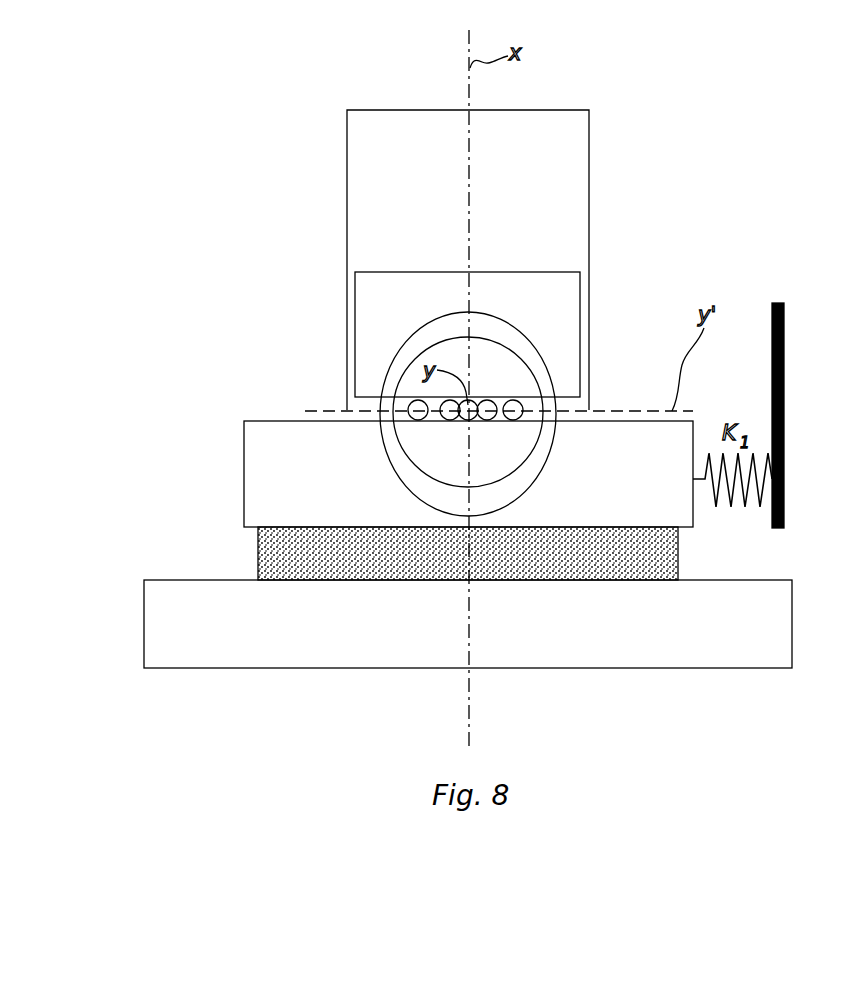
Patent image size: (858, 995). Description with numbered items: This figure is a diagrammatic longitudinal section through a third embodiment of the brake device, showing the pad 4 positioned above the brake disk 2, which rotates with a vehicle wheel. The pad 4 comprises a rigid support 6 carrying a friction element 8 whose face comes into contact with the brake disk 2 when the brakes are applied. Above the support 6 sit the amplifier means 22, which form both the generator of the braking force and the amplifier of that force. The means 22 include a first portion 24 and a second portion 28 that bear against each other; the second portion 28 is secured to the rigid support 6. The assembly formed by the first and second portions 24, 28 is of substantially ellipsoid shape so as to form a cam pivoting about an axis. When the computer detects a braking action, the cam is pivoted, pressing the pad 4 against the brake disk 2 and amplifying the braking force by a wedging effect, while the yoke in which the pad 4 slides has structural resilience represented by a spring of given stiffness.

The brake disk 2 is at (785, 637).
The brake pad 4 is at (185, 500).
The rigid support 6 is at (257, 472).
The friction element 8 is at (258, 544).
The amplifier means 22 is at (572, 366).
The first portion 24 is at (510, 368).
The second portion 28 is at (522, 447).